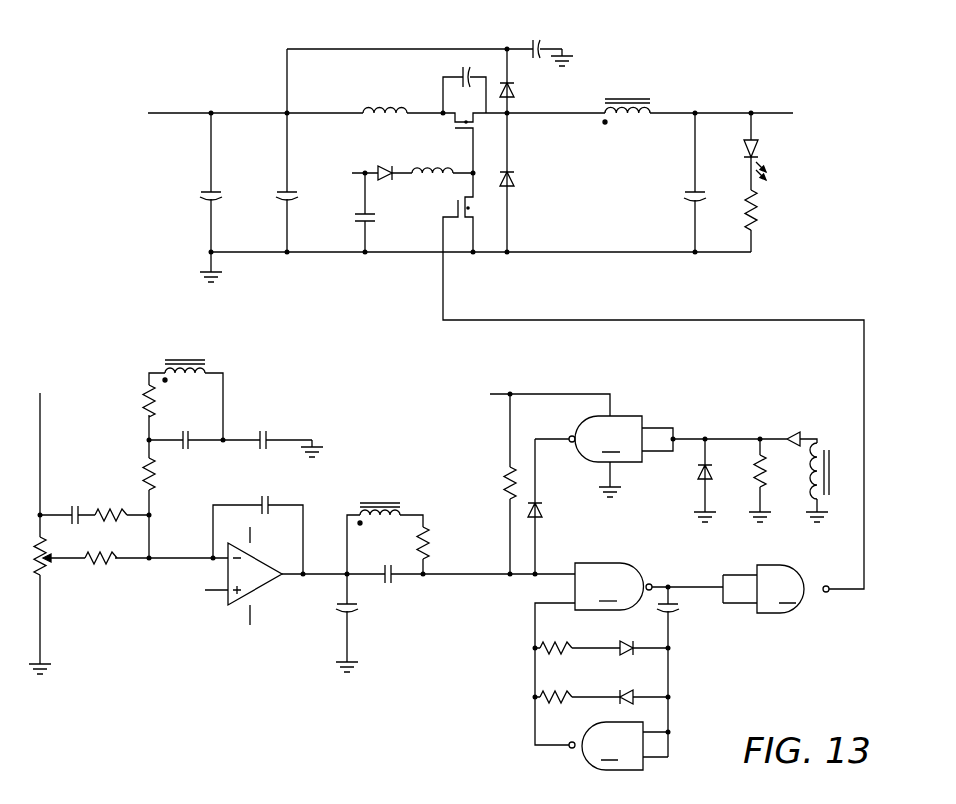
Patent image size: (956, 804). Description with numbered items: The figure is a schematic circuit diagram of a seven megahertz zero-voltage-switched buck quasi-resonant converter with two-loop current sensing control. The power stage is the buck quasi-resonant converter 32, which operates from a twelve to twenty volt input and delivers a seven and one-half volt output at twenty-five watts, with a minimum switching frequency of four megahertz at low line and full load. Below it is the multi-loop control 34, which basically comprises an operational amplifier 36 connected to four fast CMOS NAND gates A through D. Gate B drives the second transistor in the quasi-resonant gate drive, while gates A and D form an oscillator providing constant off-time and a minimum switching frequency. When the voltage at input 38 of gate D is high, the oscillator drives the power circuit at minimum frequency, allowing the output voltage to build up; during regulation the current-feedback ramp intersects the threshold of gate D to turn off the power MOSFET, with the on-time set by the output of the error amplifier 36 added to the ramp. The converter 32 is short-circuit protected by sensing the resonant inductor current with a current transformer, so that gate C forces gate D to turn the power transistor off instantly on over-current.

The buck quasi-resonant converter 32 is at (176, 186).
The multi-loop control 34 is at (426, 555).
The operational amplifier 36 is at (230, 597).
The input of gate D 38 is at (551, 564).